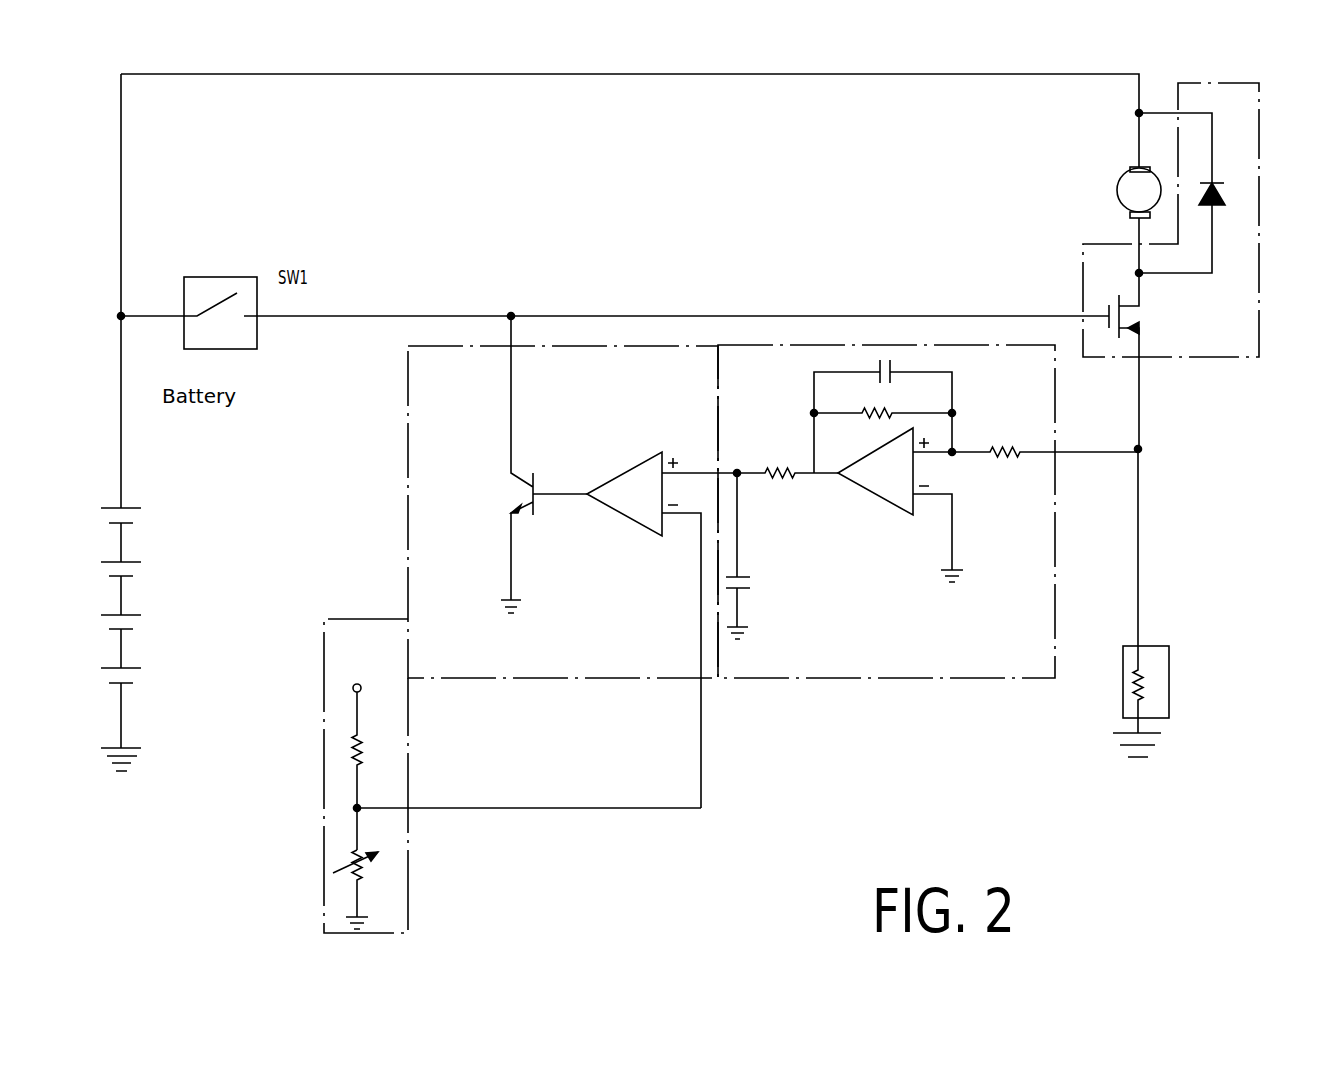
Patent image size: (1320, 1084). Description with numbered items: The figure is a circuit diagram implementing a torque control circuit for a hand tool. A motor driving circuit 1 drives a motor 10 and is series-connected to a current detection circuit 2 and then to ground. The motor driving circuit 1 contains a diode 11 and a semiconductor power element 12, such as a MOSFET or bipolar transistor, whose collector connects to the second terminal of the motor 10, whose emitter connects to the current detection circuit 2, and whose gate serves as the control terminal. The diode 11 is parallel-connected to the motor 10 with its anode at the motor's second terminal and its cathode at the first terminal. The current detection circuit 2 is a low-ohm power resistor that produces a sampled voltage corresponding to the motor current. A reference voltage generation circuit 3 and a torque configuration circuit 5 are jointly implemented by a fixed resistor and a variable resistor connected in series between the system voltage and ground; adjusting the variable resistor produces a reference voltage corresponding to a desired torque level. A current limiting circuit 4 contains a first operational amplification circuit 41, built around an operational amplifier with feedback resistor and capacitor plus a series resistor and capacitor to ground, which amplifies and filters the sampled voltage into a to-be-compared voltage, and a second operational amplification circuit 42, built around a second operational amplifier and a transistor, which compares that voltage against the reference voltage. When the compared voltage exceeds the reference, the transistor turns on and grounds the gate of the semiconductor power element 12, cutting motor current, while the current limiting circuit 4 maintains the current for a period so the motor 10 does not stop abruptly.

The motor driving circuit 1 is at (1202, 330).
The current detection circuit 2 is at (1123, 672).
The reference voltage generation circuit 3 is at (397, 702).
The current limiting circuit 4 is at (617, 237).
The torque configuration circuit 5 is at (397, 870).
The motor 10 is at (1120, 190).
The diode 11 is at (1222, 193).
The semiconductor power element 12 is at (1123, 323).
The first operational amplification circuit 41 is at (793, 363).
The second operational amplification circuit 42 is at (663, 363).